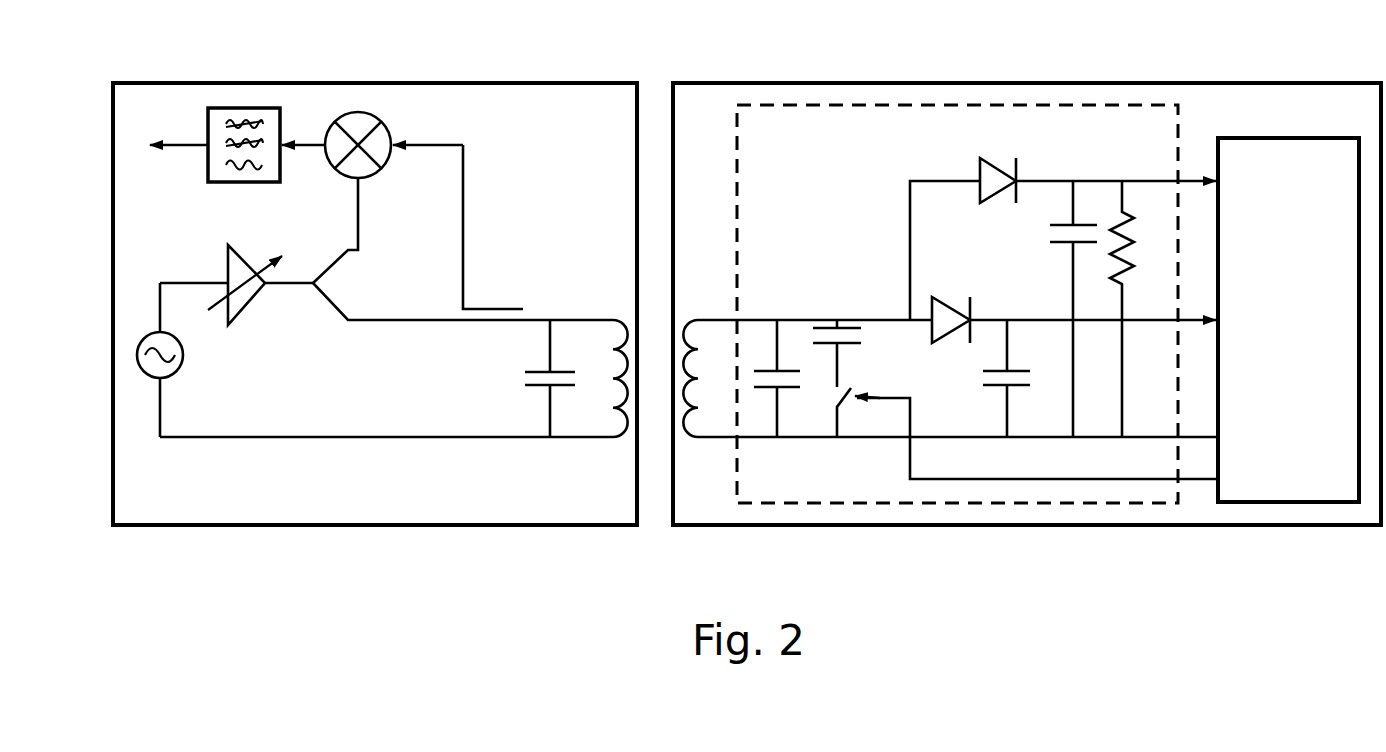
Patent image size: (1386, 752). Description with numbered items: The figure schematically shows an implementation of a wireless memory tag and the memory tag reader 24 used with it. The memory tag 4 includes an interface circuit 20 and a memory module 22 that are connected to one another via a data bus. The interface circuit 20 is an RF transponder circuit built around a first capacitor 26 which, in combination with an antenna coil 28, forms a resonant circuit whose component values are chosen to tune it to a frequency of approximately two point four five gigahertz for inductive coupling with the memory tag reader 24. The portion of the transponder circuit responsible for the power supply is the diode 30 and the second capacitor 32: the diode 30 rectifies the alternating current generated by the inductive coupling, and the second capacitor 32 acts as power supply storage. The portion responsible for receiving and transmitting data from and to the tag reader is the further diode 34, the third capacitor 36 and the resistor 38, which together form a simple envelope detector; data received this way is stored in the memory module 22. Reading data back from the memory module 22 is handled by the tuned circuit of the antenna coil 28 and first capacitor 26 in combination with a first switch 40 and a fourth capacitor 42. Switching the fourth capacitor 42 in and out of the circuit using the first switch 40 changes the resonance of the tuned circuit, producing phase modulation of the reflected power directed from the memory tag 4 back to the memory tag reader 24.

The memory tag 4 is at (975, 83).
The interface circuit 20 is at (987, 505).
The memory module 22 is at (1280, 138).
The memory tag reader 24 is at (425, 82).
The first capacitor 26 is at (790, 392).
The antenna coil 28 is at (700, 395).
The diode 30 is at (932, 300).
The second capacitor 32 is at (985, 388).
The further diode 34 is at (978, 172).
The third capacitor 36 is at (1055, 240).
The resistor 38 is at (1126, 258).
The first switch 40 is at (846, 393).
The fourth capacitor 42 is at (848, 322).